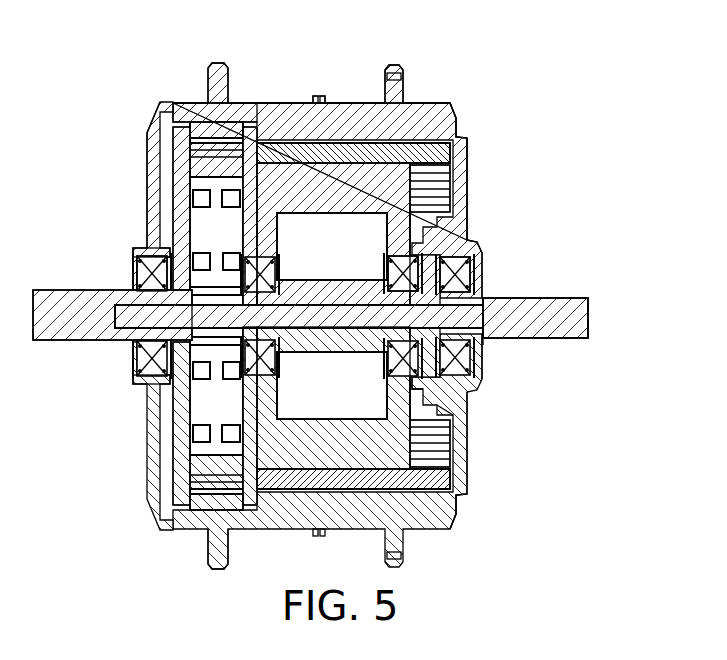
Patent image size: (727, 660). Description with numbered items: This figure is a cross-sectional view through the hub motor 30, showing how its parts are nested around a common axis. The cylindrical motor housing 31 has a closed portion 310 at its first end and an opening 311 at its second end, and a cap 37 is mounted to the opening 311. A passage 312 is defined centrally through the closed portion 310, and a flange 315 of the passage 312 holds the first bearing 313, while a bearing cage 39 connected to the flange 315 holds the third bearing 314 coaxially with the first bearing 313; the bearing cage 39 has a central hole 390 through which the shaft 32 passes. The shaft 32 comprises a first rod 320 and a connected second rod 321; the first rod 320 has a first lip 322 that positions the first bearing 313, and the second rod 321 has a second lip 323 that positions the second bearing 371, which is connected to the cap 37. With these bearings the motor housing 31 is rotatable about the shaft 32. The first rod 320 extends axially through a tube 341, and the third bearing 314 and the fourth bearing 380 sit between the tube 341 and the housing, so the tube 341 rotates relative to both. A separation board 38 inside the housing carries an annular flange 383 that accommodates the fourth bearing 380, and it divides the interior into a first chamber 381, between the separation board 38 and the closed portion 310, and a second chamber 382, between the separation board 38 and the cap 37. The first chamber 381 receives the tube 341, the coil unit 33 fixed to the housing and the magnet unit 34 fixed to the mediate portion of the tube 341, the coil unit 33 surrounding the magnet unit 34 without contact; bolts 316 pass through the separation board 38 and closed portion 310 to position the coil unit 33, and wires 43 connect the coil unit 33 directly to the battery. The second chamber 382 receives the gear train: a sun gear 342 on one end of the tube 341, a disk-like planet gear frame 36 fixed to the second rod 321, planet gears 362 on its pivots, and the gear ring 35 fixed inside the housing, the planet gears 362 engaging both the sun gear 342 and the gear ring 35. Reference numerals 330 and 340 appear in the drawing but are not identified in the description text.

The hub motor 30 is at (474, 132).
The motor housing 31 is at (360, 115).
The closed portion 310 is at (465, 200).
The opening 311 is at (162, 108).
The passage 312 is at (484, 342).
The first bearing 313 is at (480, 376).
The third bearing 314 is at (447, 389).
The flange 315 is at (450, 416).
The bolts 316 is at (393, 72).
The shaft 32 is at (559, 292).
The first rod 320 is at (575, 306).
The second rod 321 is at (74, 333).
The first lip 322 is at (485, 345).
The second lip 323 is at (138, 275).
The coil unit 33 is at (424, 502).
The stator core 330 is at (385, 150).
The magnet unit 34 is at (390, 244).
The coil winding 340 is at (430, 190).
The tube 341 is at (474, 262).
The sun gear 342 is at (175, 390).
The gear ring 35 is at (205, 132).
The planet gear frame 36 is at (175, 200).
The planet gear 362 is at (185, 470).
The cap 37 is at (152, 168).
The second bearing 371 is at (140, 248).
The separation board 38 is at (252, 130).
The fourth bearing 380 is at (262, 157).
The first chamber 381 is at (362, 400).
The second chamber 382 is at (230, 518).
The annular flange 383 is at (283, 440).
The bearing cage 39 is at (406, 275).
The hole 390 is at (468, 282).
The wires 43 is at (318, 95).